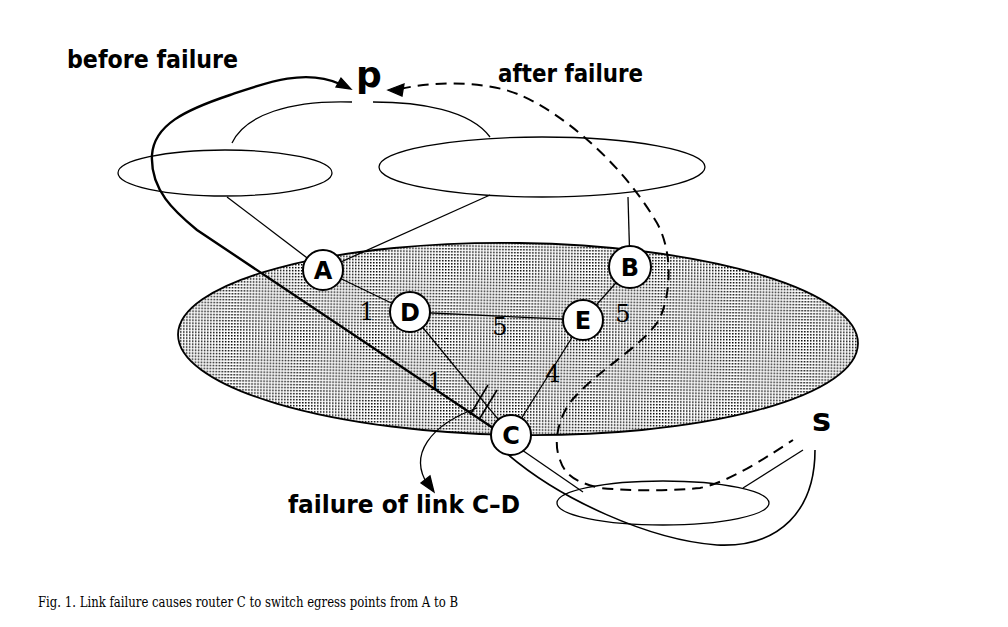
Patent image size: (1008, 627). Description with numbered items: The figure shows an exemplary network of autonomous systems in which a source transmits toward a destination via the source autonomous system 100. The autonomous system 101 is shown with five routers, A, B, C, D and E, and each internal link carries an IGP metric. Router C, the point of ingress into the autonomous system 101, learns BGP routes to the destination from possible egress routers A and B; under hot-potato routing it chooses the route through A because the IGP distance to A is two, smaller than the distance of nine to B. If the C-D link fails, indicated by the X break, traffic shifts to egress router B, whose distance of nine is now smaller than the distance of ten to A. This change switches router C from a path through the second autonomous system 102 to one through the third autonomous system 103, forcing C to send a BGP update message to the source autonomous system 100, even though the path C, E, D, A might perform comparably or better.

The autonomous system AS 0 100 is at (585, 522).
The autonomous system AS 1 101 is at (810, 297).
The autonomous system AS 2 102 is at (123, 182).
The autonomous system AS 3 103 is at (700, 155).